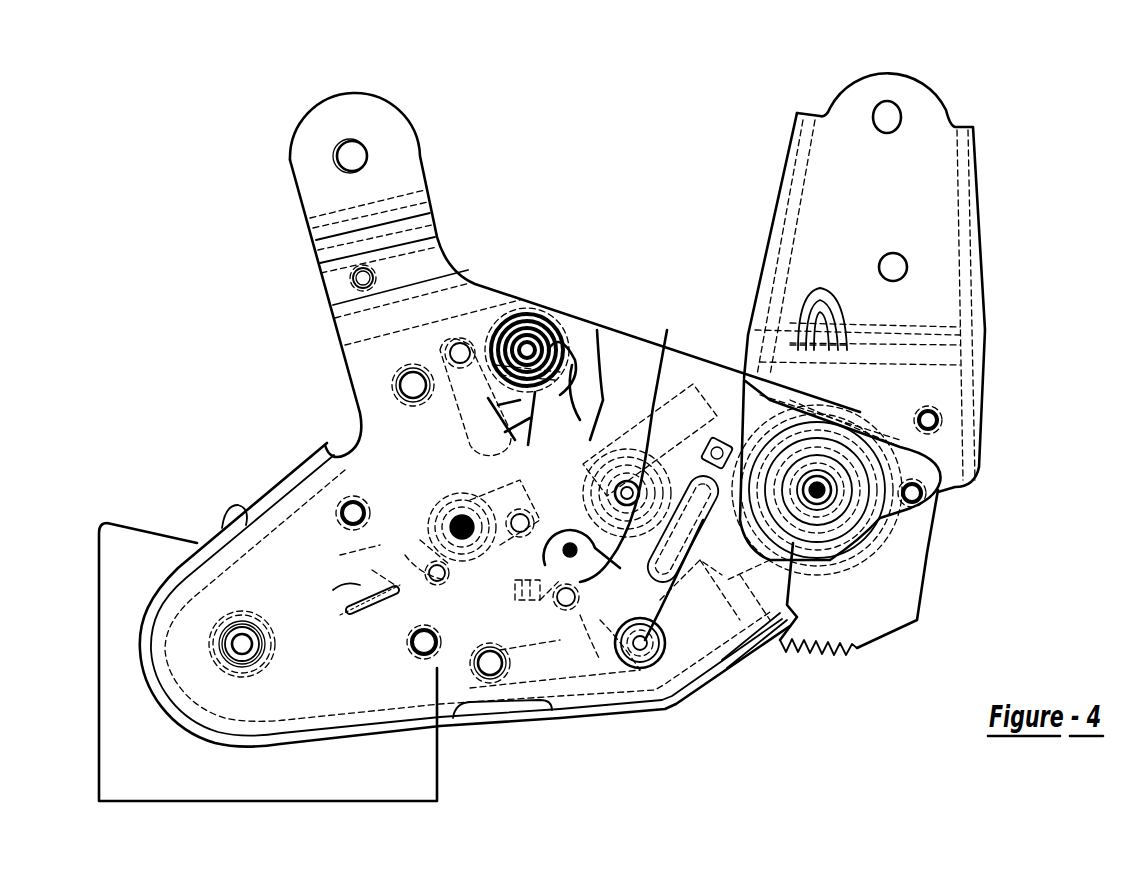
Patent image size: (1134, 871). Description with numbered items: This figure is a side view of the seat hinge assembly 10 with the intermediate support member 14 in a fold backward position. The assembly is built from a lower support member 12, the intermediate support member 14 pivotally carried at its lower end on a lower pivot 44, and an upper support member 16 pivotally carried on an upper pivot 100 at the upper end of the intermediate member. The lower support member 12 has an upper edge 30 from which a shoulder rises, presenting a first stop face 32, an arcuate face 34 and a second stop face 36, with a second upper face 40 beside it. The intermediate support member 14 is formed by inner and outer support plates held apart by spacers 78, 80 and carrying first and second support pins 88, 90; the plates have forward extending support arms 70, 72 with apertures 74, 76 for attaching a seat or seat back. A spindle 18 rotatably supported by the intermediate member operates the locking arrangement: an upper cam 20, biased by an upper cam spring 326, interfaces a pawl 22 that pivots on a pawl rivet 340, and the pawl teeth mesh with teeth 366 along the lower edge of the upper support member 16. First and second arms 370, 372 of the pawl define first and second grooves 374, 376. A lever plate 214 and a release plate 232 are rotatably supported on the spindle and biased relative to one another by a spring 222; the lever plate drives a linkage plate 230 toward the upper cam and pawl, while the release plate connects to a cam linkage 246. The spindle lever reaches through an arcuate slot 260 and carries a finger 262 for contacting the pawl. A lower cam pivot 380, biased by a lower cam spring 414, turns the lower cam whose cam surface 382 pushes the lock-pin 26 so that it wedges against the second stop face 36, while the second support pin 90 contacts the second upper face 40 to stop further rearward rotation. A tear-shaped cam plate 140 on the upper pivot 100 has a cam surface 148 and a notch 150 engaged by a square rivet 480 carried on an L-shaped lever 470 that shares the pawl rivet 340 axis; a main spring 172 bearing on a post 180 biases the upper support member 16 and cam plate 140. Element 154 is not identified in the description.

The seat hinge assembly 10 is at (182, 165).
The lower support member 12 is at (90, 677).
The intermediate support member 14 is at (546, 732).
The upper support member 16 is at (843, 74).
The spindle 18 is at (636, 398).
The upper cam 20 is at (541, 345).
The pawl 22 is at (622, 488).
The lock-pin 26 is at (367, 613).
The upper edge 30 is at (173, 530).
The first stop face 32 is at (224, 526).
The arcuate face 34 is at (360, 547).
The second stop face 36 is at (333, 590).
The second upper face 40 is at (392, 633).
The lower pivot 44 is at (217, 637).
The support arm 70 is at (375, 95).
The support arm 72 is at (415, 267).
The aperture 74 is at (355, 154).
The aperture 76 is at (372, 277).
The spacer 78 is at (400, 368).
The spacer 80 is at (495, 685).
The first support pin 88 is at (340, 497).
The second support pin 90 is at (438, 634).
The upper pivot 100 is at (887, 520).
The cam plate 140 is at (905, 447).
The cam surface 148 is at (715, 525).
The notch 150 is at (793, 545).
The fastener 154 is at (925, 493).
The main spring 172 is at (850, 400).
The post 180 is at (930, 412).
The lever plate 214 is at (405, 555).
The spring 222 is at (712, 385).
The linkage plate 230 is at (455, 405).
The release plate 232 is at (687, 350).
The cam linkage 246 is at (575, 580).
The arcuate slot 260 is at (523, 593).
The finger 262 is at (575, 578).
The upper cam spring 326 is at (525, 295).
The pawl rivet 340 is at (672, 680).
The teeth 366 is at (828, 656).
The first arm 370 is at (557, 345).
The second arm 372 is at (590, 585).
The first groove 374 is at (572, 365).
The second groove 376 is at (673, 607).
The lower cam pivot 380 is at (458, 522).
The cam surface 382 is at (378, 565).
The lower cam spring 414 is at (465, 495).
The lever 470 is at (673, 608).
The square rivet 480 is at (718, 400).